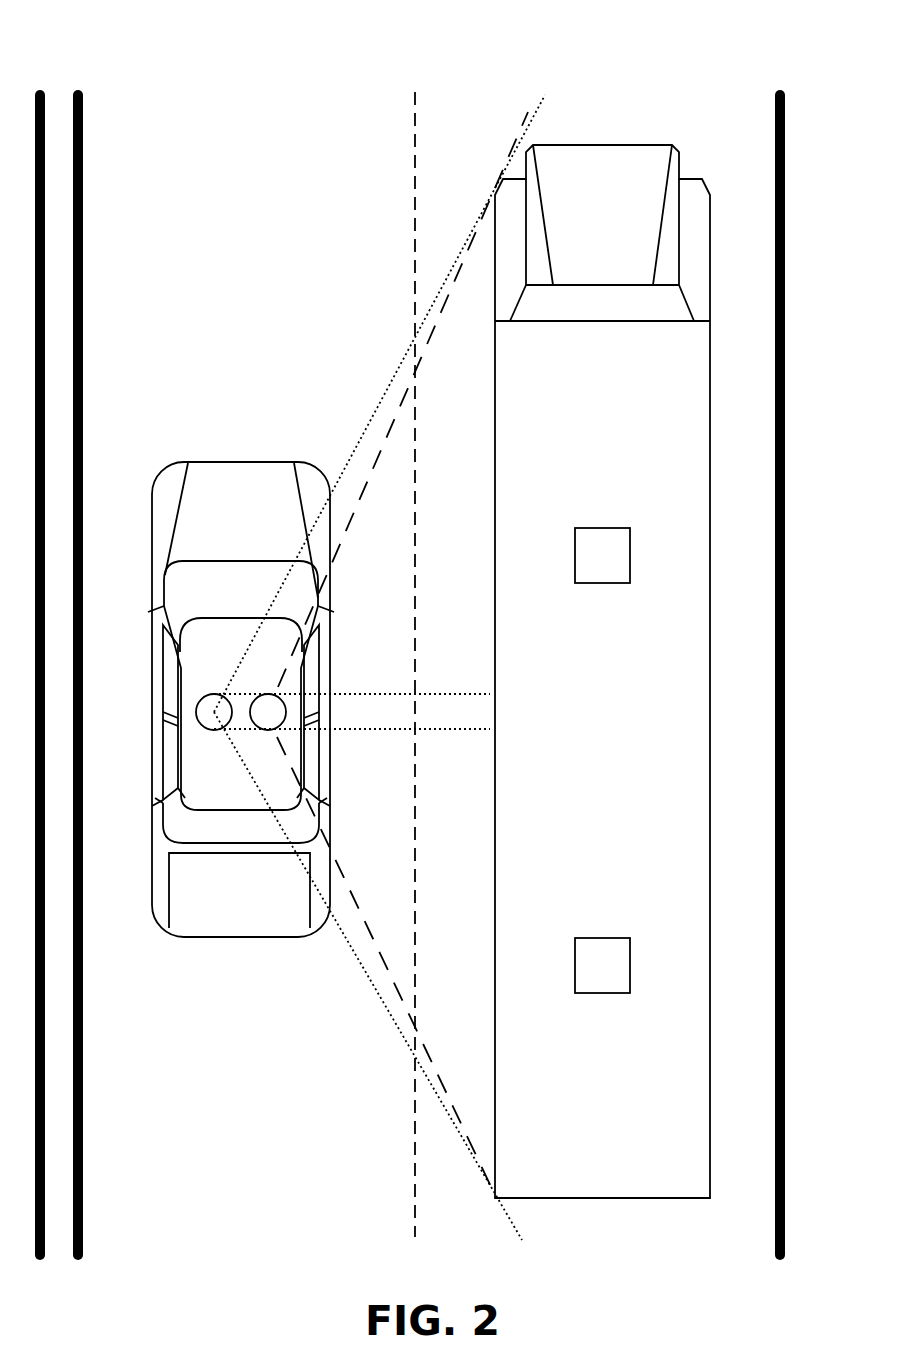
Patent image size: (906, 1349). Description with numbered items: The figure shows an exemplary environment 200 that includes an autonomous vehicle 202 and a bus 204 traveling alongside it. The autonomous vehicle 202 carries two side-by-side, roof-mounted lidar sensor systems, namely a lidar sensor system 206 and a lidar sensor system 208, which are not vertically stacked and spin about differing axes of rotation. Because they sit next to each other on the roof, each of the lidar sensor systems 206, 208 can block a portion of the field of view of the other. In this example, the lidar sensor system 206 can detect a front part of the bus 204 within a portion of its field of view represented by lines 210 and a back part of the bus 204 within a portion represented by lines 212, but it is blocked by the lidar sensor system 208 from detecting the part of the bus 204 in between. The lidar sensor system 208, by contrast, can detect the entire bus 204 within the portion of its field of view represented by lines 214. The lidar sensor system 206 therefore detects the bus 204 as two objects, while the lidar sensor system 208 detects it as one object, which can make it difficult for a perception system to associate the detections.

The environment 200 is at (115, 57).
The autonomous vehicle 202 is at (224, 464).
The bus 204 is at (627, 145).
The lidar sensor system 206 is at (198, 702).
The lidar sensor system 208 is at (283, 699).
The lines 210 is at (382, 394).
The lines 212 is at (487, 729).
The lines 214 is at (355, 512).